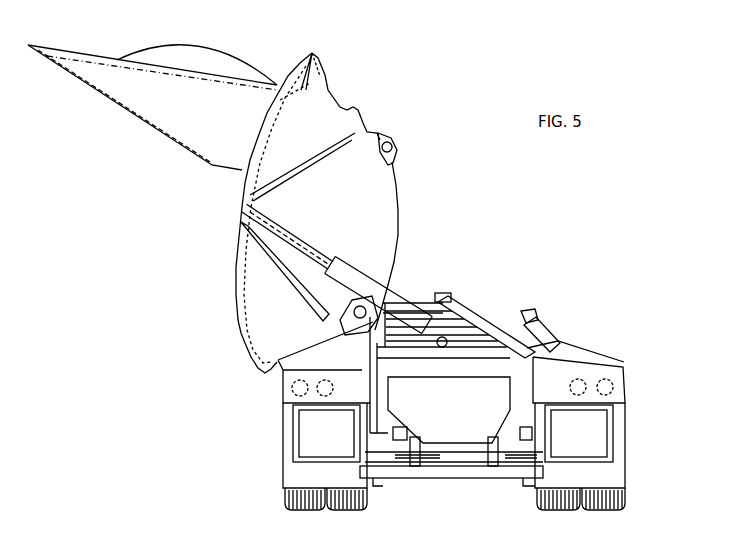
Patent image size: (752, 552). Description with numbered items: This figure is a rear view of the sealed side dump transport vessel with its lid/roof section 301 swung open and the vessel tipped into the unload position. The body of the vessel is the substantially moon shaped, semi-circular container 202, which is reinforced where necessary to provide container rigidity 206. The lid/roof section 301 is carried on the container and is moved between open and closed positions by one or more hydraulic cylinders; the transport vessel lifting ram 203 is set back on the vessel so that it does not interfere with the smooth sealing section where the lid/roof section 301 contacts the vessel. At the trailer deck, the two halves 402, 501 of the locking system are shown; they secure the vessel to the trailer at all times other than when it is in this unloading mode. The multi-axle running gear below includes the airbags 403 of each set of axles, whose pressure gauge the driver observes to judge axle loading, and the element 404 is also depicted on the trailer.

The lid/roof section 301 is at (148, 68).
The container rigidity reinforcement 206 is at (312, 53).
The container 202 is at (302, 147).
The transport vessel lifting ram 203 is at (355, 278).
The locking system half 501 is at (392, 140).
The locking system half 402 is at (443, 295).
The vehicle body 404 is at (520, 372).
The airbags 403 is at (380, 425).